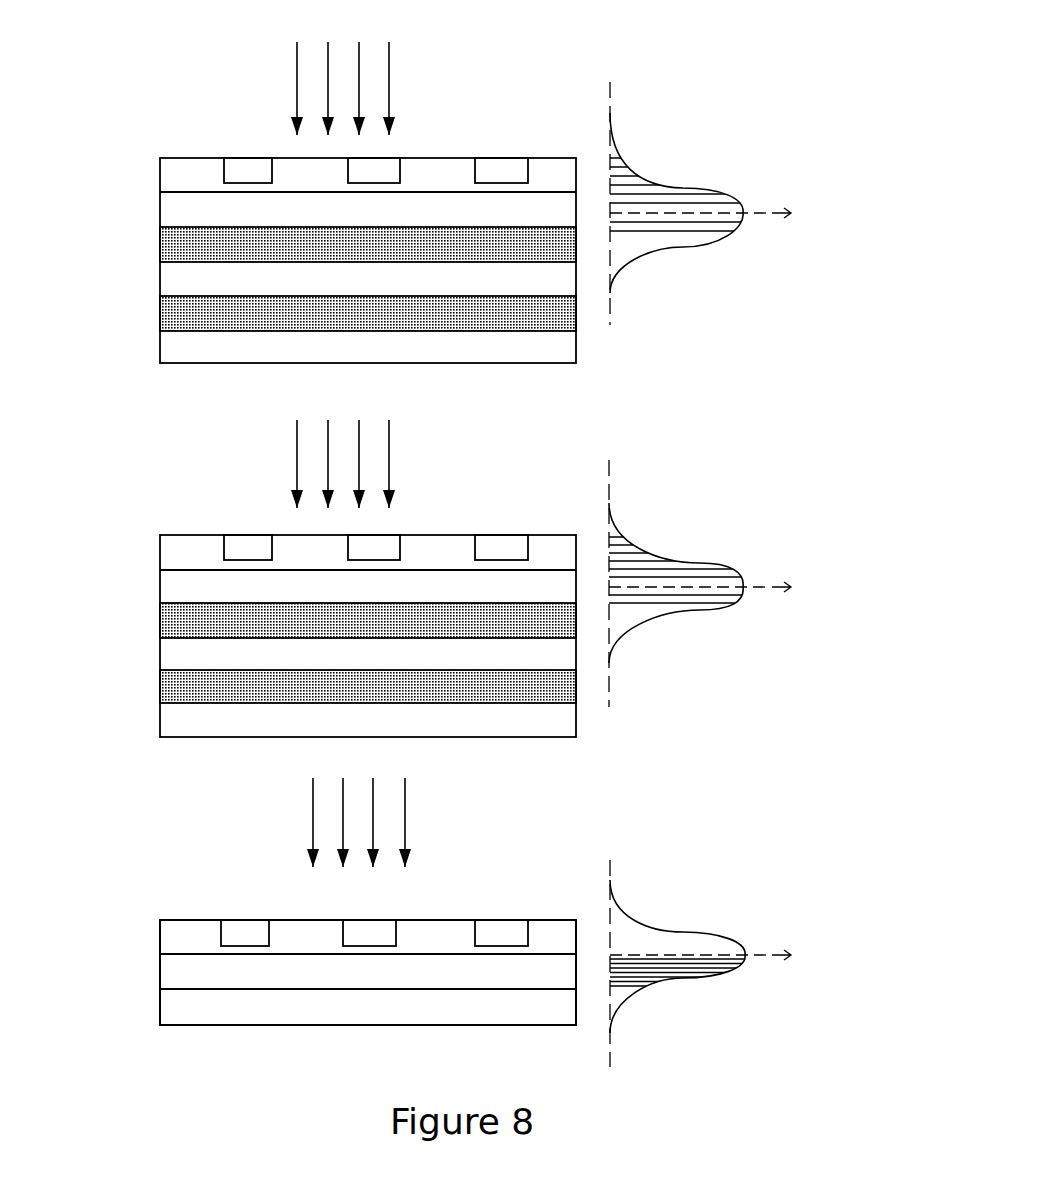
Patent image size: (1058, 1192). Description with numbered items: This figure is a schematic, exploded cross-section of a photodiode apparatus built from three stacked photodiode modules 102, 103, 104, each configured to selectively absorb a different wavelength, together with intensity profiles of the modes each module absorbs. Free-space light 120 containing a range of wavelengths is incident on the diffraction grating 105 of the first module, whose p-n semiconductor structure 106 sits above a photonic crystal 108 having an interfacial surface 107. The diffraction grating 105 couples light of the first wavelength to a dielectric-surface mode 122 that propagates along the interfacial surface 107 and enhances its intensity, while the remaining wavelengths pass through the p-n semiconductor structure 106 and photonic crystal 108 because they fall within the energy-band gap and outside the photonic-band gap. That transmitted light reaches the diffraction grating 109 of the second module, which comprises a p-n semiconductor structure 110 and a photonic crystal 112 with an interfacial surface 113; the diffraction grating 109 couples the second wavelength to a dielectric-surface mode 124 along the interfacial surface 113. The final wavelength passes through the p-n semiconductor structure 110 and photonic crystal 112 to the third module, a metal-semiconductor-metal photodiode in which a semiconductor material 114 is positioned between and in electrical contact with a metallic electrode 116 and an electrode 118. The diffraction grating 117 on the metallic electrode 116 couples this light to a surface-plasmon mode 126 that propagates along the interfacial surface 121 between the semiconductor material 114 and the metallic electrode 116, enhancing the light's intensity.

The photodiode module 102 is at (304, 220).
The photodiode module 103 is at (309, 587).
The photodiode module 104 is at (321, 917).
The diffraction grating 105 is at (211, 143).
The p-n semiconductor structure 106 is at (334, 165).
The interfacial surface 107 is at (452, 226).
The photonic crystal 108 is at (334, 220).
The diffraction grating 109 is at (205, 516).
The p-n semiconductor structure 110 is at (334, 538).
The photonic crystal 112 is at (340, 587).
The interfacial surface 113 is at (528, 602).
The semiconductor material 114 is at (175, 974).
The metallic electrode 116 is at (354, 903).
The diffraction grating 117 is at (255, 900).
The electrode 118 is at (175, 1006).
The free-space light 120 is at (405, 43).
The interfacial surface 121 is at (540, 953).
The dielectric-surface mode 122 is at (684, 180).
The dielectric-surface mode 124 is at (693, 527).
The surface-plasmon mode 126 is at (683, 920).